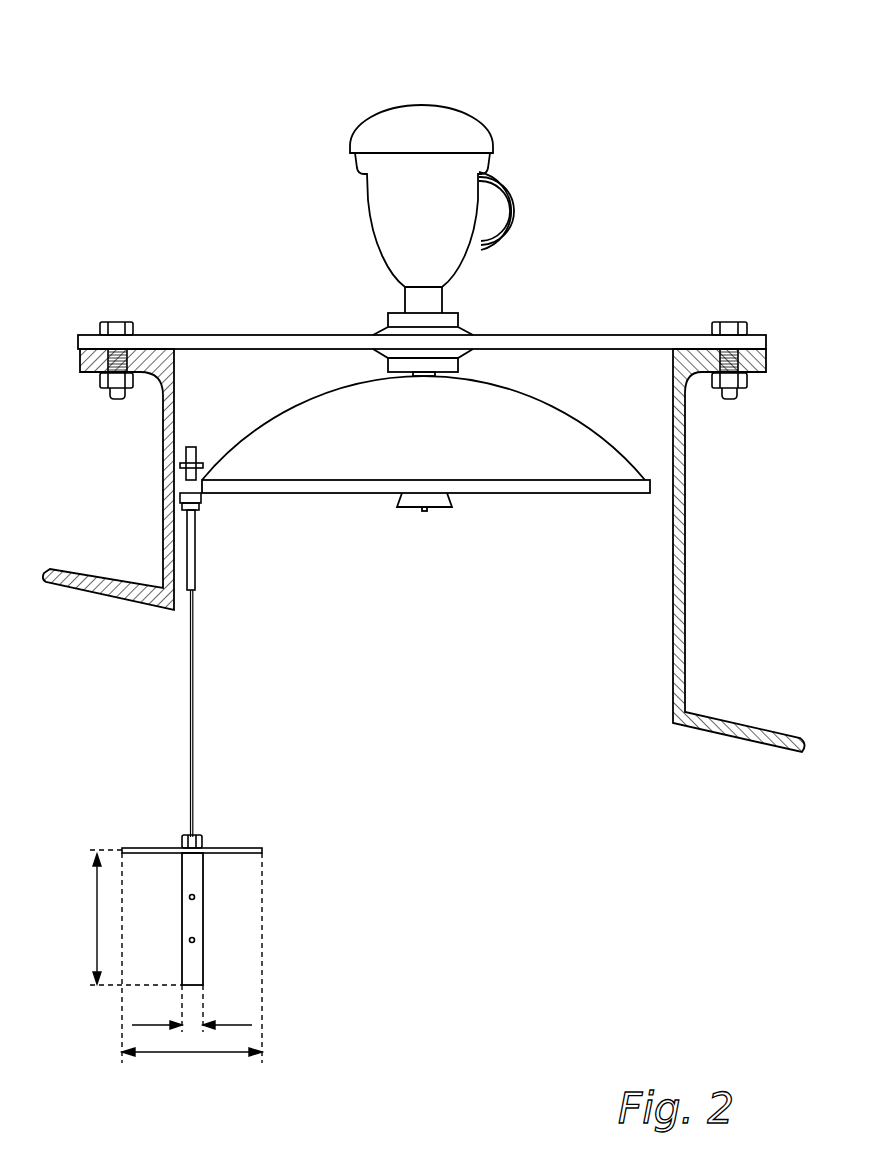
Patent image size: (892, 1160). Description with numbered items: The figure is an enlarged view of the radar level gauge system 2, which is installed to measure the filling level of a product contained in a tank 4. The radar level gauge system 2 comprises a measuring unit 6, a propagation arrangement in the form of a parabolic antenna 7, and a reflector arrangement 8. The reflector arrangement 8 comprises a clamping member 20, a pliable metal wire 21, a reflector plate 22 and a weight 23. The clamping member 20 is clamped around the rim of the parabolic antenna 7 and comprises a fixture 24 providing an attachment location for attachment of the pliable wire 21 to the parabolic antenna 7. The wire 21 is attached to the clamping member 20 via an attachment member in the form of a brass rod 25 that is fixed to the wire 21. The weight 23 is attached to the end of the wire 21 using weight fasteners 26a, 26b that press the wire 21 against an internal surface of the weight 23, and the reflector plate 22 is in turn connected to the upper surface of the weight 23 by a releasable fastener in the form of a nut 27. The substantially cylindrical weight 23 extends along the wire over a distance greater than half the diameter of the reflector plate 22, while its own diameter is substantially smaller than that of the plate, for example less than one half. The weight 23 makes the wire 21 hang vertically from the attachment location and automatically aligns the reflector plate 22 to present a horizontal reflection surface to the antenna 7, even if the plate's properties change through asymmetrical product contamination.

The radar level gauge system 2 is at (520, 67).
The tank 4 is at (752, 725).
The measuring unit 6 is at (365, 210).
The parabolic antenna 7 is at (575, 435).
The reflector arrangement 8 is at (322, 850).
The clamping member 20 is at (530, 487).
The pliable metal wire 21 is at (194, 638).
The reflector plate 22 is at (154, 848).
The weight 23 is at (185, 927).
The fixture 24 is at (202, 479).
The brass rod 25 is at (193, 528).
The weight fastener 26a is at (197, 897).
The weight fastener 26b is at (197, 940).
The nut 27 is at (201, 838).